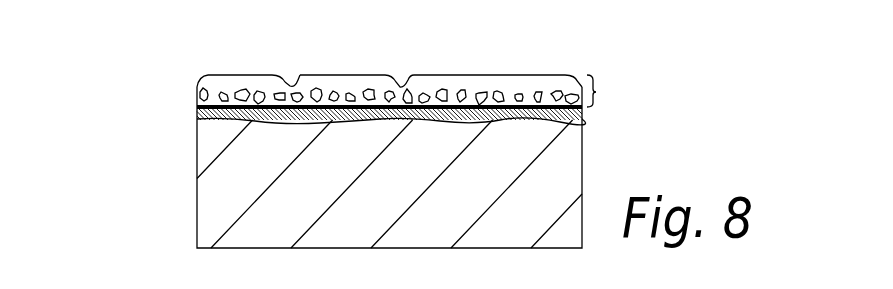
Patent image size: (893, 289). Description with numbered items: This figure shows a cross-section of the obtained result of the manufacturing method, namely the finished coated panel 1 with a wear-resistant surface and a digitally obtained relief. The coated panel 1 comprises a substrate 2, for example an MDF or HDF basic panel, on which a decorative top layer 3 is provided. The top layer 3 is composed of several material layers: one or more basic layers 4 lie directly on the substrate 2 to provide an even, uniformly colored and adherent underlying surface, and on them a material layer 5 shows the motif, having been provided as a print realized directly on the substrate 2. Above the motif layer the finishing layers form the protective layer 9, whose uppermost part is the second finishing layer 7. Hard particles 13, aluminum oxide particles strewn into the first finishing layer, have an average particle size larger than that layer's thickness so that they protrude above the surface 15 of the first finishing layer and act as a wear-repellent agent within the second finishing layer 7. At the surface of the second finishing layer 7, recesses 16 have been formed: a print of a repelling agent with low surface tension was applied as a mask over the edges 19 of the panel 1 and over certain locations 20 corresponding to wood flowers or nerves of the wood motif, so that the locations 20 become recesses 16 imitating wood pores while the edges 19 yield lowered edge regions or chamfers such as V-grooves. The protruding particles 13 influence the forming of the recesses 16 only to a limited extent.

The coated panel 1 is at (569, 54).
The substrate 2 is at (220, 184).
The decorative top layer 3 is at (371, 68).
The basic layer 4 is at (585, 111).
The material layer with motif 5 is at (323, 74).
The second finishing layer 7 is at (230, 83).
The protective layer 9 is at (596, 92).
The hard particles 13 is at (495, 87).
The surface of the first finishing layer 15 is at (440, 76).
The recesses 16 is at (203, 82).
The edges of the panel 19 is at (128, 68).
The locations in the surface of the panel 20 is at (403, 78).